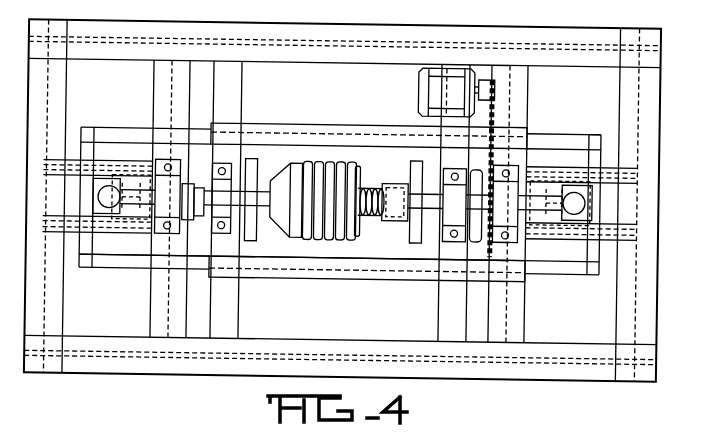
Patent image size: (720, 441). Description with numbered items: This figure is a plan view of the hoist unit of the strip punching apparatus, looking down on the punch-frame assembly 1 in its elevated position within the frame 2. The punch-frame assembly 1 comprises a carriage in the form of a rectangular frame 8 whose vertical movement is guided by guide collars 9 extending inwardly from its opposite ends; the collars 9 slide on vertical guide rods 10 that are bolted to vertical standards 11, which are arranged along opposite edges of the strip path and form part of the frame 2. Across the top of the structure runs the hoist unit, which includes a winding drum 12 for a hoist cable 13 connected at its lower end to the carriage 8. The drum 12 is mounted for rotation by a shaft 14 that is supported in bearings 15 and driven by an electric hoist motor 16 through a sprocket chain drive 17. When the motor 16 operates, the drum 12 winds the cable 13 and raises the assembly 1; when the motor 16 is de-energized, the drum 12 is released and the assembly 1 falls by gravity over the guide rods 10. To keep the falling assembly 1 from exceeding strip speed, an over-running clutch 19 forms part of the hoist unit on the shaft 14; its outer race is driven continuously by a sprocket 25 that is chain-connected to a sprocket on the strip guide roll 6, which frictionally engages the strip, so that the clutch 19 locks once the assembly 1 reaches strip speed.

The punch-frame assembly 1 is at (131, 276).
The frame 2 is at (660, 166).
The guide roll 6 is at (396, 175).
The rectangular frame 8 is at (601, 132).
The guide collars 9 is at (96, 202).
The vertical guide rods 10 is at (108, 206).
The vertical standards 11 is at (123, 171).
The winding drum 12 is at (355, 179).
The hoist cable 13 is at (312, 163).
The shaft 14 is at (432, 240).
The bearings 15 is at (463, 176).
The electric hoist motor 16 is at (417, 89).
The sprocket chain drive 17 is at (492, 116).
The over-running clutch 19 is at (205, 186).
The sprocket 25 is at (190, 186).